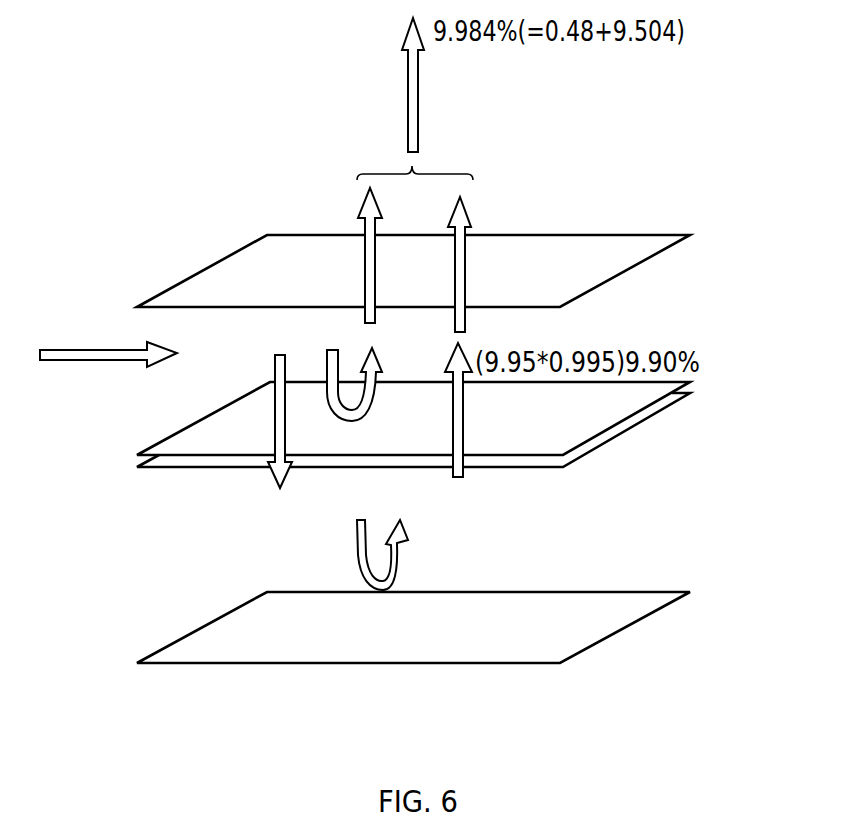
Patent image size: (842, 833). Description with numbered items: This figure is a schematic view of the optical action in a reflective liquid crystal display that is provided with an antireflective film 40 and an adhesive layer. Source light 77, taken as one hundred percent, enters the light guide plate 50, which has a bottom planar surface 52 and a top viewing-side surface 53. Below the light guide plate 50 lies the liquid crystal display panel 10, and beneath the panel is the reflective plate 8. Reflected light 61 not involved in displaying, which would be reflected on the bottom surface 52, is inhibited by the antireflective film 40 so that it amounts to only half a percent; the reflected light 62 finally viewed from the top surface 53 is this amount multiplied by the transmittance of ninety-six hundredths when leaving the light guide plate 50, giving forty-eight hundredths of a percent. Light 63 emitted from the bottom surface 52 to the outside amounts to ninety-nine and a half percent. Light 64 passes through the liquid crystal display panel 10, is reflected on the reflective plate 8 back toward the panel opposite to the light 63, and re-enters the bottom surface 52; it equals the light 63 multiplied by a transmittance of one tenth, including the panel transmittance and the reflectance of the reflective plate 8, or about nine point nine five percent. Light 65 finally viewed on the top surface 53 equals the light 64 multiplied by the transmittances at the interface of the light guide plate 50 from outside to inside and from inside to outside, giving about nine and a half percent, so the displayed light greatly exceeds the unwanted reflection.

The reflective plate 8 is at (210, 668).
The liquid crystal display panel 10 is at (702, 393).
The antireflective film 40 is at (172, 468).
The light guide plate 50 is at (702, 235).
The bottom surface 52 is at (193, 436).
The top surface 53 is at (187, 278).
The reflected light 61 is at (332, 362).
The reflected light 62 is at (360, 250).
The light 63 is at (270, 388).
The light 64 is at (358, 537).
The light 65 is at (463, 248).
The source light 77 is at (85, 353).